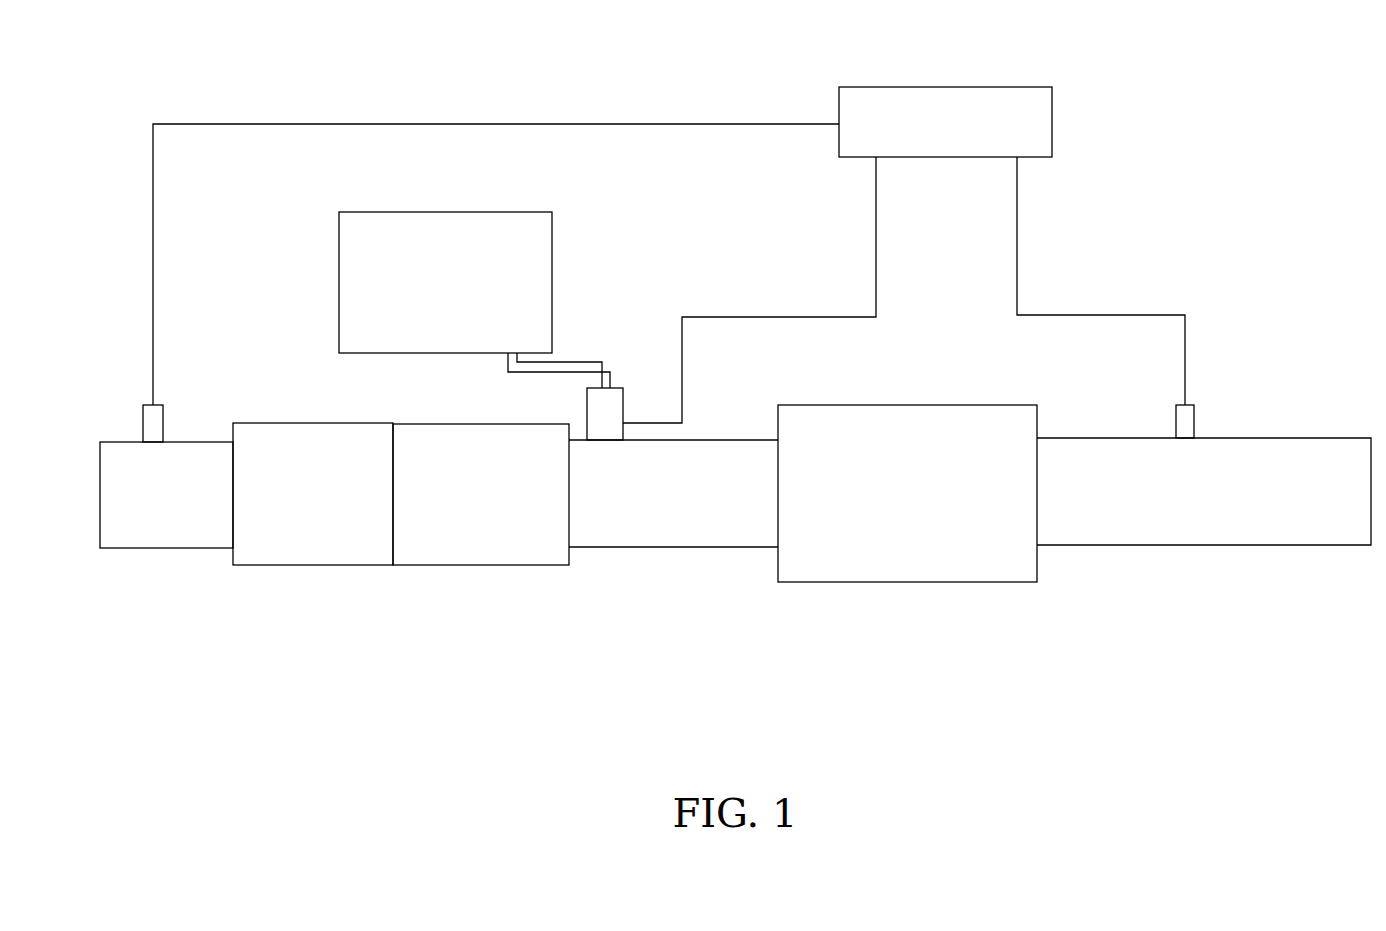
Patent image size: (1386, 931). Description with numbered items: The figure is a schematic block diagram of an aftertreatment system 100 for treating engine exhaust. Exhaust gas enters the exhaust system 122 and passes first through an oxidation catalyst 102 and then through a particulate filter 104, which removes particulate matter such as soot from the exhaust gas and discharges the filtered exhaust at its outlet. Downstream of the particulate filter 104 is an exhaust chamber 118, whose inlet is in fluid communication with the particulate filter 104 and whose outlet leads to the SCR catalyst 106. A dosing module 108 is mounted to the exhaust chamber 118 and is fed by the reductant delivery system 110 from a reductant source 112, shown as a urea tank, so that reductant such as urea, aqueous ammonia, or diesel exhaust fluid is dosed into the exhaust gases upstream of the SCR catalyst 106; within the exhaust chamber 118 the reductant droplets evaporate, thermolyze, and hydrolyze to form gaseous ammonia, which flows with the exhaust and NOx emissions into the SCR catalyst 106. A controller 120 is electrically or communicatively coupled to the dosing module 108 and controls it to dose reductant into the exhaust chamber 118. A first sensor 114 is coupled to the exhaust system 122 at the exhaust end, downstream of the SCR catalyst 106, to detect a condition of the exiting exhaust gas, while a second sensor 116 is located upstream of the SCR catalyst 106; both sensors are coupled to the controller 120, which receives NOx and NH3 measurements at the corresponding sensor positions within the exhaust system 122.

The aftertreatment system 100 is at (128, 64).
The oxidation catalyst 102 is at (258, 566).
The particulate filter 104 is at (424, 566).
The SCR catalyst 106 is at (918, 583).
The dosing module 108 is at (626, 405).
The reductant delivery system 110 is at (605, 300).
The reductant source 112 is at (511, 211).
The first sensor 114 is at (1224, 407).
The second sensor 116 is at (193, 409).
The exhaust chamber 118 is at (676, 562).
The controller 120 is at (1000, 86).
The exhaust system 122 is at (524, 673).